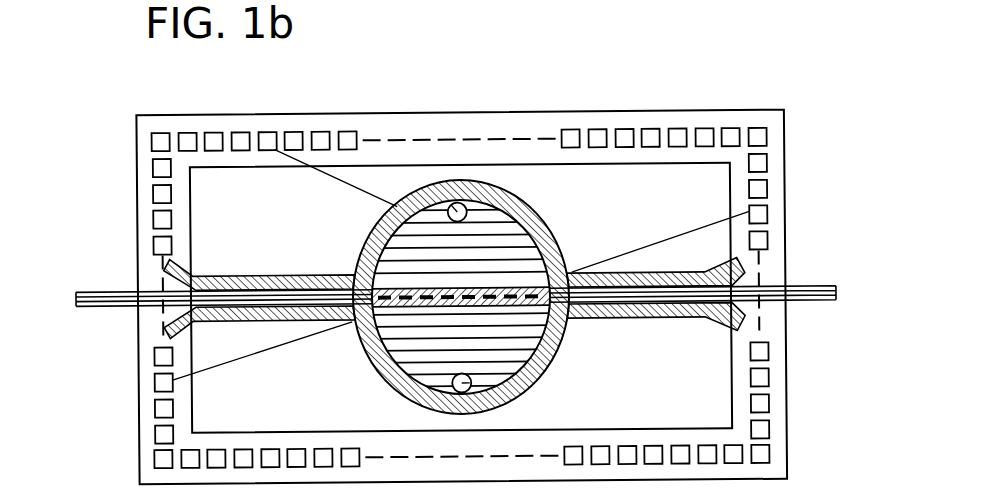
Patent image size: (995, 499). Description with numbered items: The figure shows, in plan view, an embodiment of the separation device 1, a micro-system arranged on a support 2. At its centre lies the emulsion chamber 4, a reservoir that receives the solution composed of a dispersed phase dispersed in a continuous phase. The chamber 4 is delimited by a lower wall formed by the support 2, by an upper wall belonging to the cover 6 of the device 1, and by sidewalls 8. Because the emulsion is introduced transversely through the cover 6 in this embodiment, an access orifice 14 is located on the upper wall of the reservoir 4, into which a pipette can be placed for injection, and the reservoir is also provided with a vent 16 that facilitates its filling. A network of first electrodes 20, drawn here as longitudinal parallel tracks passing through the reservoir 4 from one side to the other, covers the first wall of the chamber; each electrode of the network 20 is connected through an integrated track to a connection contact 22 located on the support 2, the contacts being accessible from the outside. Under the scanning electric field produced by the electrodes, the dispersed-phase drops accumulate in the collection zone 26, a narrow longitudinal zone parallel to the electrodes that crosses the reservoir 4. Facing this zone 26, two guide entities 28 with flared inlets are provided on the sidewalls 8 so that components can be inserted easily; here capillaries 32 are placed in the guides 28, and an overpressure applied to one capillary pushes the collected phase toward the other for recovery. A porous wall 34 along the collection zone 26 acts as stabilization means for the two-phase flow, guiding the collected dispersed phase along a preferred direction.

The separation device 1 is at (104, 210).
The support 2 is at (197, 128).
The emulsion chamber 4 is at (540, 216).
The cover 6 is at (275, 180).
The sidewalls 8 is at (372, 232).
The access orifice 14 is at (497, 404).
The vent 16 is at (419, 191).
The first electrodes 20 is at (378, 372).
The connection contact 22 is at (166, 168).
The collection zone 26 is at (497, 296).
The guide entities 28 is at (196, 270).
The capillaries 32 is at (122, 308).
The porous wall 34 is at (410, 288).